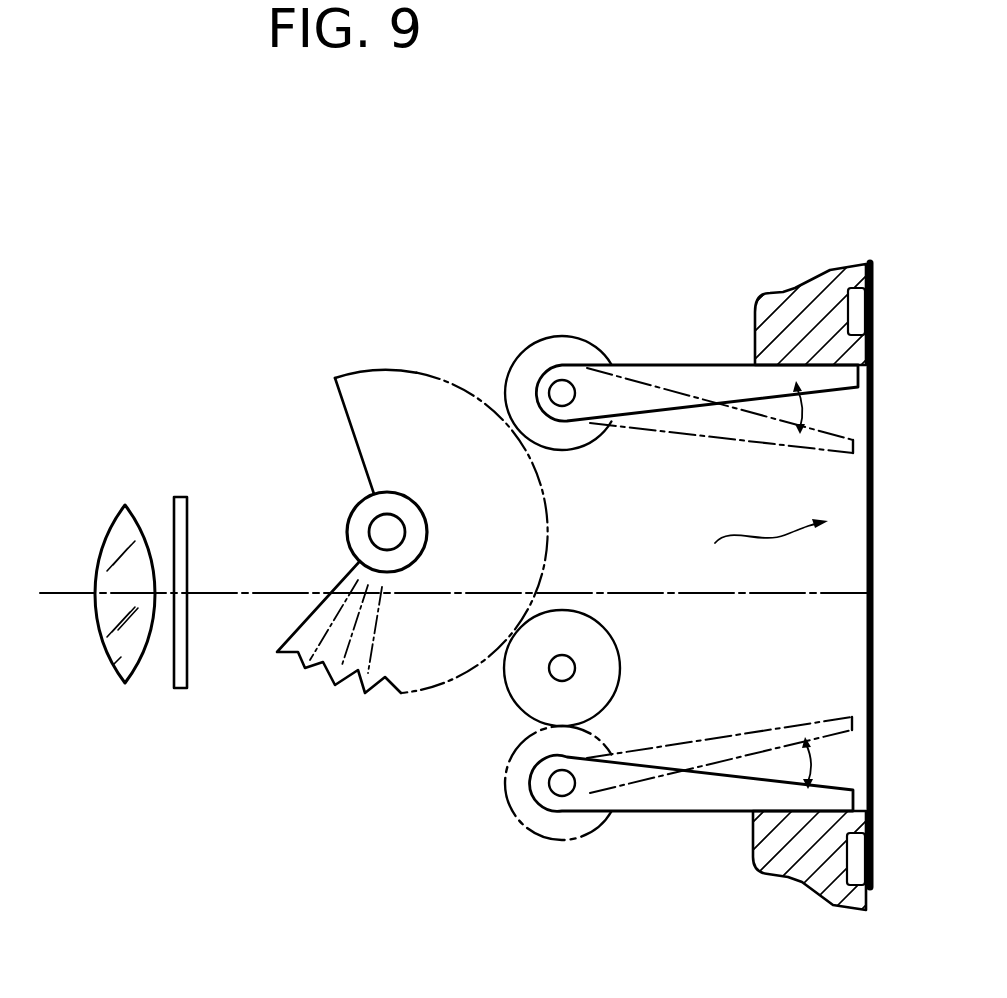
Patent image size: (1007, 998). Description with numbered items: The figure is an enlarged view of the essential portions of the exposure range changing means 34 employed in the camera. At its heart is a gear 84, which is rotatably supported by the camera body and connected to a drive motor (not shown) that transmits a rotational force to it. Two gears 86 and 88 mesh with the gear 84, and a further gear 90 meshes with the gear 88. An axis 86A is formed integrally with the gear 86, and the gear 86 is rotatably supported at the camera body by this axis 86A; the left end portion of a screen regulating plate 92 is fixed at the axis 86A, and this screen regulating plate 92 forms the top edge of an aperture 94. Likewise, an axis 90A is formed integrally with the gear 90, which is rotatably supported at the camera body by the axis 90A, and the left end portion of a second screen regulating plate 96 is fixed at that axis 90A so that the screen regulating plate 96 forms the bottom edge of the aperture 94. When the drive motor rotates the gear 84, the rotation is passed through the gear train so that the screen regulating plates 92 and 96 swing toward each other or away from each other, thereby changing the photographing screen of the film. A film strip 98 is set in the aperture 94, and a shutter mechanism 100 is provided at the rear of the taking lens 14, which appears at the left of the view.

The exposure range changing means 34 is at (657, 200).
The taking lens 14 is at (113, 663).
The shutter mechanism 100 is at (174, 692).
The gear 84 is at (412, 387).
The gear 86 is at (580, 347).
The axis 86A is at (551, 378).
The screen regulating plate 92 is at (713, 363).
The gear 88 is at (527, 690).
The gear 90 is at (568, 827).
The axis 90A is at (553, 788).
The screen regulating plate 96 is at (700, 813).
The aperture 94 is at (744, 541).
The film strip 98 is at (867, 653).